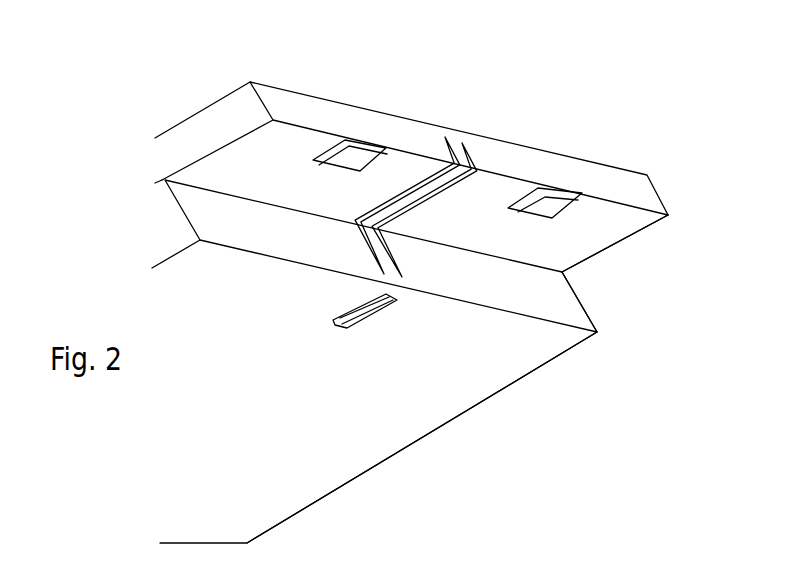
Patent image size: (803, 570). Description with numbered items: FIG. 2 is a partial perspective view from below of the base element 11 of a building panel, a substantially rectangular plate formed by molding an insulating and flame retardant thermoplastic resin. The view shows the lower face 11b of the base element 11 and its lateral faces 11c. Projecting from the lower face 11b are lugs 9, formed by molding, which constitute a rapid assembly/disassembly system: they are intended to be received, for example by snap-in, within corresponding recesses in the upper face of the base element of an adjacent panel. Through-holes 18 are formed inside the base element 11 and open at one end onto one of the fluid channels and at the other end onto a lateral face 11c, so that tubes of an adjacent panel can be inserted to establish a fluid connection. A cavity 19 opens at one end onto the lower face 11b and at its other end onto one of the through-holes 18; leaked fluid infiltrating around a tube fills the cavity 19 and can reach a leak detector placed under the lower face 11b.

The base element 11 is at (578, 107).
The lower face 11b is at (512, 240).
The lateral faces 11c is at (576, 180).
The lugs 9 is at (358, 147).
The through-holes 18 is at (462, 143).
The cavity 19 is at (373, 312).